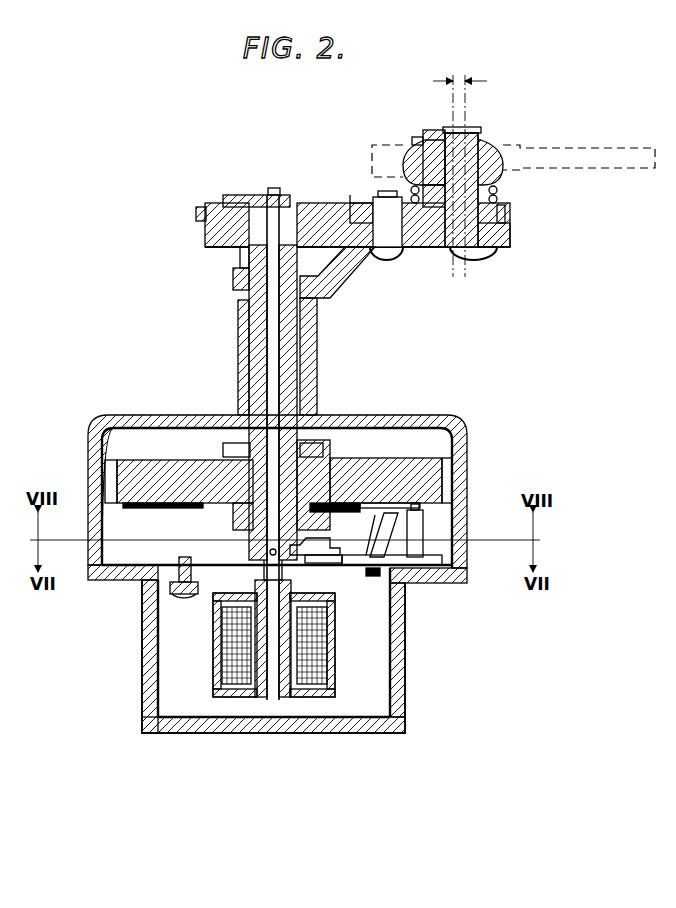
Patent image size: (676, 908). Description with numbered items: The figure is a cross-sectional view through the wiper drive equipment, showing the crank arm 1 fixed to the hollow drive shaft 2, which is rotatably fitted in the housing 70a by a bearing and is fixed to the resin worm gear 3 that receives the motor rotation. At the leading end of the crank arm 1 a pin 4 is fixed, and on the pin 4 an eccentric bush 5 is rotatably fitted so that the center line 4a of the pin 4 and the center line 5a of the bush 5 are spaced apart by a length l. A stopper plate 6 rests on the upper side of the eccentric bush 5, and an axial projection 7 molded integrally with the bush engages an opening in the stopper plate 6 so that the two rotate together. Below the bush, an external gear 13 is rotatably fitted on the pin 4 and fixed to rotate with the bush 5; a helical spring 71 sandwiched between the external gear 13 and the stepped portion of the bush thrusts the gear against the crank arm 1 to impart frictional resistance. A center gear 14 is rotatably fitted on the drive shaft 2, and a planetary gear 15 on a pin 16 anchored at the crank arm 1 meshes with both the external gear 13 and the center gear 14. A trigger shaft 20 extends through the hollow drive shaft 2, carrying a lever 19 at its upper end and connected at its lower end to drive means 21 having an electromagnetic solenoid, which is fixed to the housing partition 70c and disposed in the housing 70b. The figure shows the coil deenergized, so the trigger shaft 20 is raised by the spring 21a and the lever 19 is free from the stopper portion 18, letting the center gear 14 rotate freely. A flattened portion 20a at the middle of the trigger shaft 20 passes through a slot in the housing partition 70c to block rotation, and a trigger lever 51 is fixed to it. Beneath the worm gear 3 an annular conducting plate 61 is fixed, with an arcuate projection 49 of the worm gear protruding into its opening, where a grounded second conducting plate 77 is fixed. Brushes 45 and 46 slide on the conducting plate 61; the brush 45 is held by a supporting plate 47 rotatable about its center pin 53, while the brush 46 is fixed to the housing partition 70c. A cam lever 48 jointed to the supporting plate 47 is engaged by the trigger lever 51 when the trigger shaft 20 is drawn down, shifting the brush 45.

The crank arm 1 is at (440, 250).
The drive shaft 2 is at (318, 335).
The worm gear 3 is at (428, 490).
The pin 4 is at (473, 176).
The center line of the pin 4a is at (465, 78).
The eccentric bush 5 is at (440, 172).
The center line of the bush 5a is at (453, 78).
The stopper plate 6 is at (418, 137).
The axial projection 7 is at (432, 132).
The external gear 13 is at (495, 224).
The center gear 14 is at (228, 248).
The planetary gear 15 is at (352, 205).
The pin 16 is at (388, 255).
The stopper portion 18 is at (220, 230).
The lever 19 is at (246, 197).
The trigger shaft 20 is at (270, 298).
The flattened portion 20a is at (280, 553).
The drive means 21 is at (233, 661).
The spring 21a is at (287, 698).
The brush 45 is at (400, 500).
The brush 46 is at (420, 518).
The supporting plate 47 is at (395, 551).
The cam lever 48 is at (340, 572).
The arcuate projection 49 is at (378, 522).
The trigger lever 51 is at (350, 538).
The center pin 53 is at (372, 576).
The conducting plate 61 is at (170, 490).
The housing 70a is at (115, 415).
The housing 70b is at (148, 724).
The housing partition 70c is at (308, 570).
The helical spring 71 is at (497, 192).
The conducting plate 77 is at (330, 550).
The length l is at (466, 79).